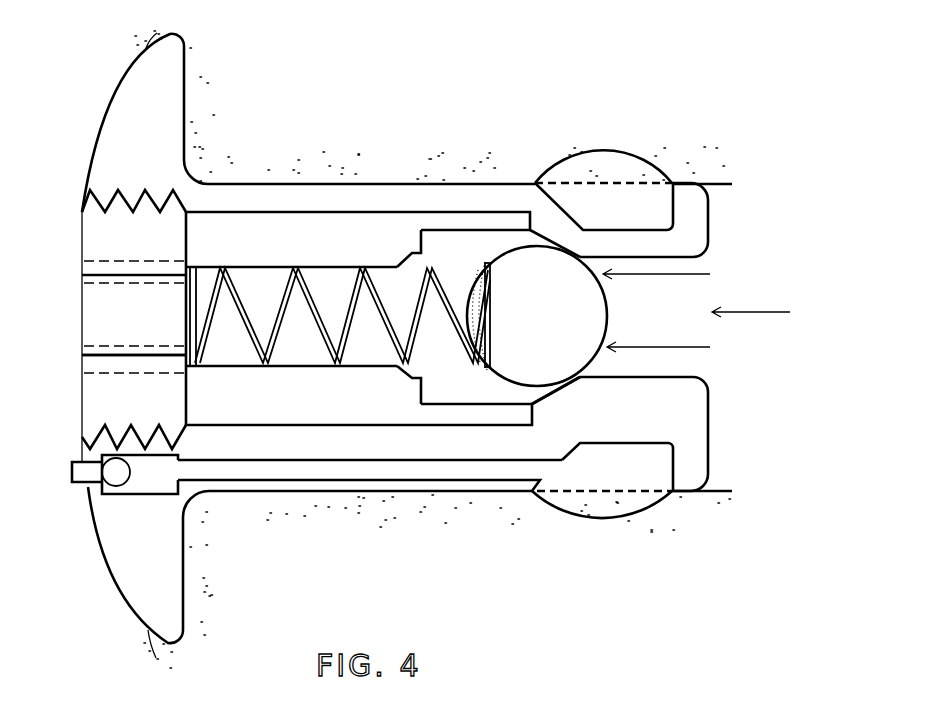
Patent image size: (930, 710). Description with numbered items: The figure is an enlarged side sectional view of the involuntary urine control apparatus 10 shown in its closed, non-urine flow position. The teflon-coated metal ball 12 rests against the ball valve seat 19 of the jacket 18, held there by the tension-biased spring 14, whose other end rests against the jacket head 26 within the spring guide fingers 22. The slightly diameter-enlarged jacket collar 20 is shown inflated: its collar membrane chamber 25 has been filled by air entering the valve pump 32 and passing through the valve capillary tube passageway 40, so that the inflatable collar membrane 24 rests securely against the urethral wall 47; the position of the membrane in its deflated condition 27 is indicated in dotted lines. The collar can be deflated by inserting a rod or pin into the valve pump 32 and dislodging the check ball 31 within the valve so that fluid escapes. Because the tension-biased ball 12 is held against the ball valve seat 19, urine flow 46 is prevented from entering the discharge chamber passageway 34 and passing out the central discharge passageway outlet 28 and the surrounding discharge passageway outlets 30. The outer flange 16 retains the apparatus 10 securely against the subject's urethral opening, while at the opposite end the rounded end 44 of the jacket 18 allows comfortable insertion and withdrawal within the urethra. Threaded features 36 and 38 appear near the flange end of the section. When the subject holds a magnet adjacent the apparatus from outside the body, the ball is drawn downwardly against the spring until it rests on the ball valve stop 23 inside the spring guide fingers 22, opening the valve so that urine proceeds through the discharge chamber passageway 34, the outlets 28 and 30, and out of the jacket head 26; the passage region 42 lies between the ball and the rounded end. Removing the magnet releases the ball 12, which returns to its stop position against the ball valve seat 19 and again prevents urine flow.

The involuntary urine control apparatus 10 is at (50, 76).
The teflon-coated metal ball 12 is at (566, 318).
The tension-biased spring 14 is at (252, 316).
The outer flange 16 is at (174, 58).
The jacket 18 is at (267, 183).
The ball valve seat 19 is at (553, 383).
The jacket collar 20 is at (585, 150).
The spring guide fingers 22 is at (500, 223).
The ball valve stop 23 is at (417, 260).
The inflatable collar membrane 24 is at (585, 228).
The collar membrane chamber 25 is at (632, 480).
The jacket head 26 is at (82, 365).
The deflated condition 27 is at (635, 493).
The central discharge passageway outlet 28 is at (150, 335).
The surrounding discharge passageway outlets 30 is at (88, 268).
The check ball 31 is at (108, 485).
The valve pump 32 is at (72, 470).
The discharge chamber passageway 34 is at (316, 352).
The threads 36 is at (107, 197).
The threads 38 is at (93, 207).
The valve capillary tube passageway 40 is at (423, 472).
The flow passage 42 is at (678, 324).
The rounded end 44 is at (710, 210).
The urine flow 46 is at (792, 323).
The urethral wall 47 is at (382, 172).